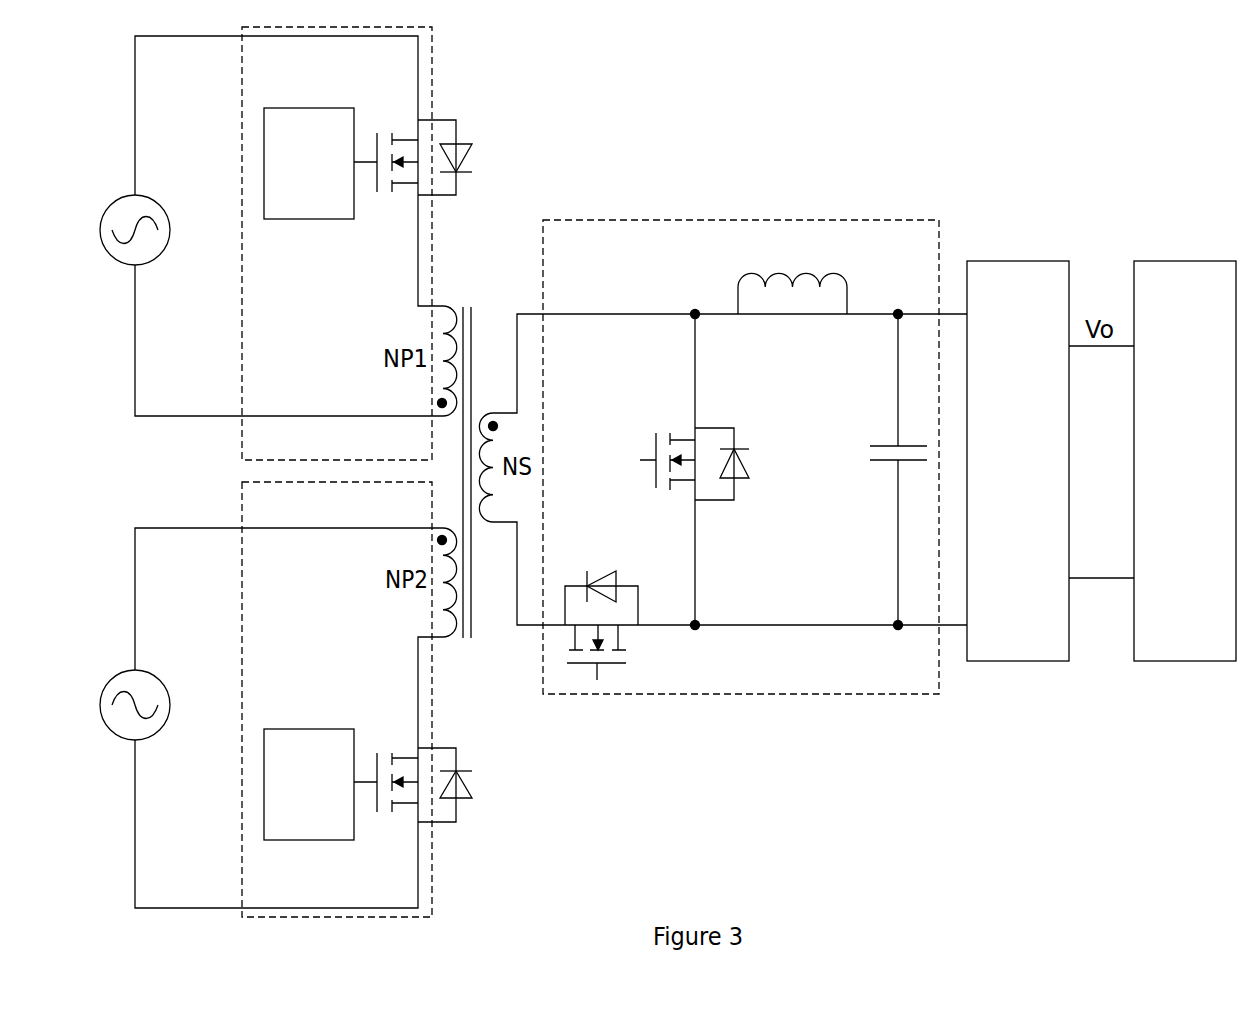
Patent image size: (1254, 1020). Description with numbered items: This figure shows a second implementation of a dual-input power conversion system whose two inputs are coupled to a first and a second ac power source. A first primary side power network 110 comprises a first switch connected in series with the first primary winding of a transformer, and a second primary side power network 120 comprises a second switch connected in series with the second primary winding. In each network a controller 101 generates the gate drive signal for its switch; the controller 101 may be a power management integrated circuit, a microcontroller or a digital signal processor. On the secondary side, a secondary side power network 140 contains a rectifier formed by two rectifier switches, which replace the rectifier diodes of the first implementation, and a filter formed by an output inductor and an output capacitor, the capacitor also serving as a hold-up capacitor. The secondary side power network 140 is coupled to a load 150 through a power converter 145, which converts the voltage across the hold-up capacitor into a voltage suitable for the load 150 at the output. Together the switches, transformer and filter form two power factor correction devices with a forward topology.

The controller 101 is at (329, 158).
The first primary side power network 110 is at (347, 452).
The second primary side power network 120 is at (347, 513).
The secondary side power network 140 is at (763, 663).
The power converter 145 is at (1039, 475).
The load 150 is at (1208, 475).